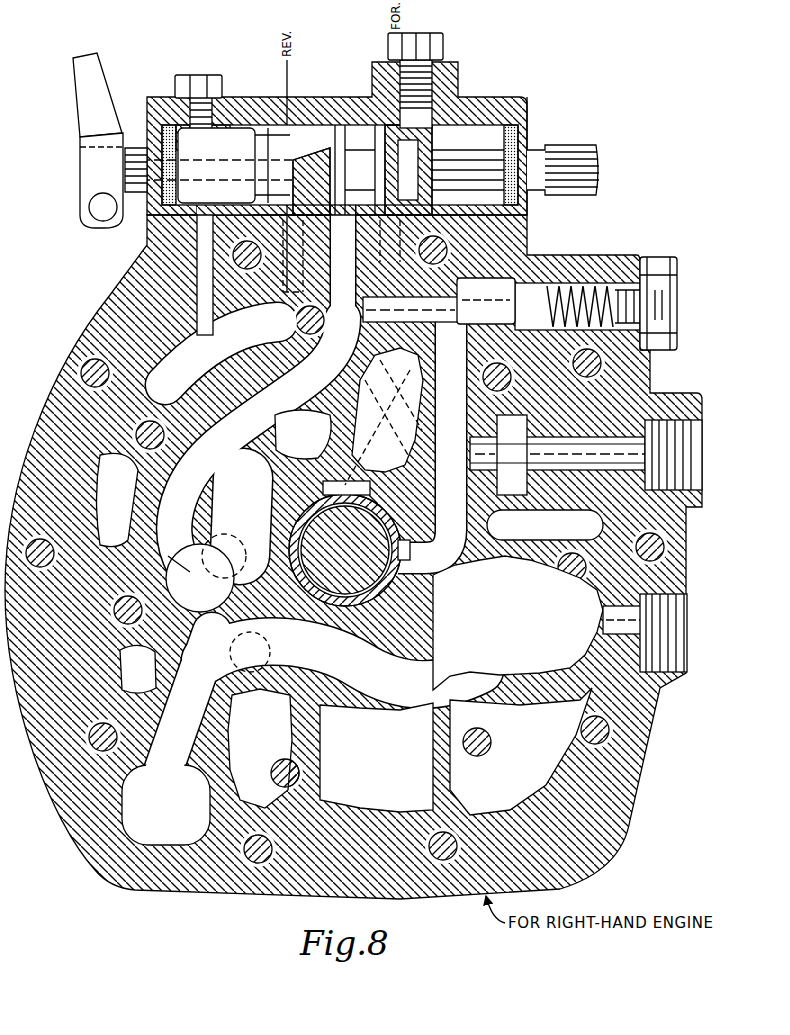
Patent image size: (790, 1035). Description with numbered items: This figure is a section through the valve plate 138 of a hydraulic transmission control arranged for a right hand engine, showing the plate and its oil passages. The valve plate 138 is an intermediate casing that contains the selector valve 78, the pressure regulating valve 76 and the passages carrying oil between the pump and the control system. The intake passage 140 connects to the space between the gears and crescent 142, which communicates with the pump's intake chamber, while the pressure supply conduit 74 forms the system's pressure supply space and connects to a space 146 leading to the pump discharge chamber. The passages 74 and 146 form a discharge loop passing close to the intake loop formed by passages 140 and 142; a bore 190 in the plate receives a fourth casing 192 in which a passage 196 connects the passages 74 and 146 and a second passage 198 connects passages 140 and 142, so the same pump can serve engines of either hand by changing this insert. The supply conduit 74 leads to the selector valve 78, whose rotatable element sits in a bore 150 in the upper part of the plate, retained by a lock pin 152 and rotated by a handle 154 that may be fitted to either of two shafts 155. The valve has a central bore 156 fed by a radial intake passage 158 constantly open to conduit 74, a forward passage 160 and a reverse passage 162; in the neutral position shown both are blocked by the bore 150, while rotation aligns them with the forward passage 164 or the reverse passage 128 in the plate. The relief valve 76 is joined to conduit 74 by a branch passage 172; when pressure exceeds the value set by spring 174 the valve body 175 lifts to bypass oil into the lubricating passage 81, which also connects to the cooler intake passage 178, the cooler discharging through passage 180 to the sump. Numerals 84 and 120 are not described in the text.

The pressure supply conduit 74 is at (252, 347).
The pressure regulating valve 76 is at (651, 261).
The selector valve 78 is at (531, 127).
The lubricating passage 81 is at (349, 543).
The lubrication passage 84 is at (366, 466).
The forward adjusting bolt 120 is at (440, 100).
The reverse passage 128 is at (280, 286).
The valve plate 138 is at (77, 833).
The intake passage 140 is at (130, 846).
The space between the gears and crescent 142 is at (384, 688).
The space 146 is at (217, 503).
The bore 150 is at (246, 117).
The lock pin 152 is at (178, 96).
The handle 154 is at (88, 98).
The shafts 155 is at (563, 187).
The central bore 156 is at (308, 171).
The radial intake passage 158 is at (352, 170).
The forward passage 160 is at (394, 170).
The reverse passage 162 is at (292, 160).
The forward passage 164 is at (378, 440).
The branch passage 172 is at (272, 386).
The spring 174 is at (600, 279).
The valve body 175 is at (518, 284).
The cooler intake passage 178 is at (562, 432).
The cooler discharge passage 180 is at (617, 627).
The bore 190 is at (168, 581).
The fourth casing 192 is at (236, 556).
The passage 196 is at (190, 572).
The passage 198 is at (241, 670).